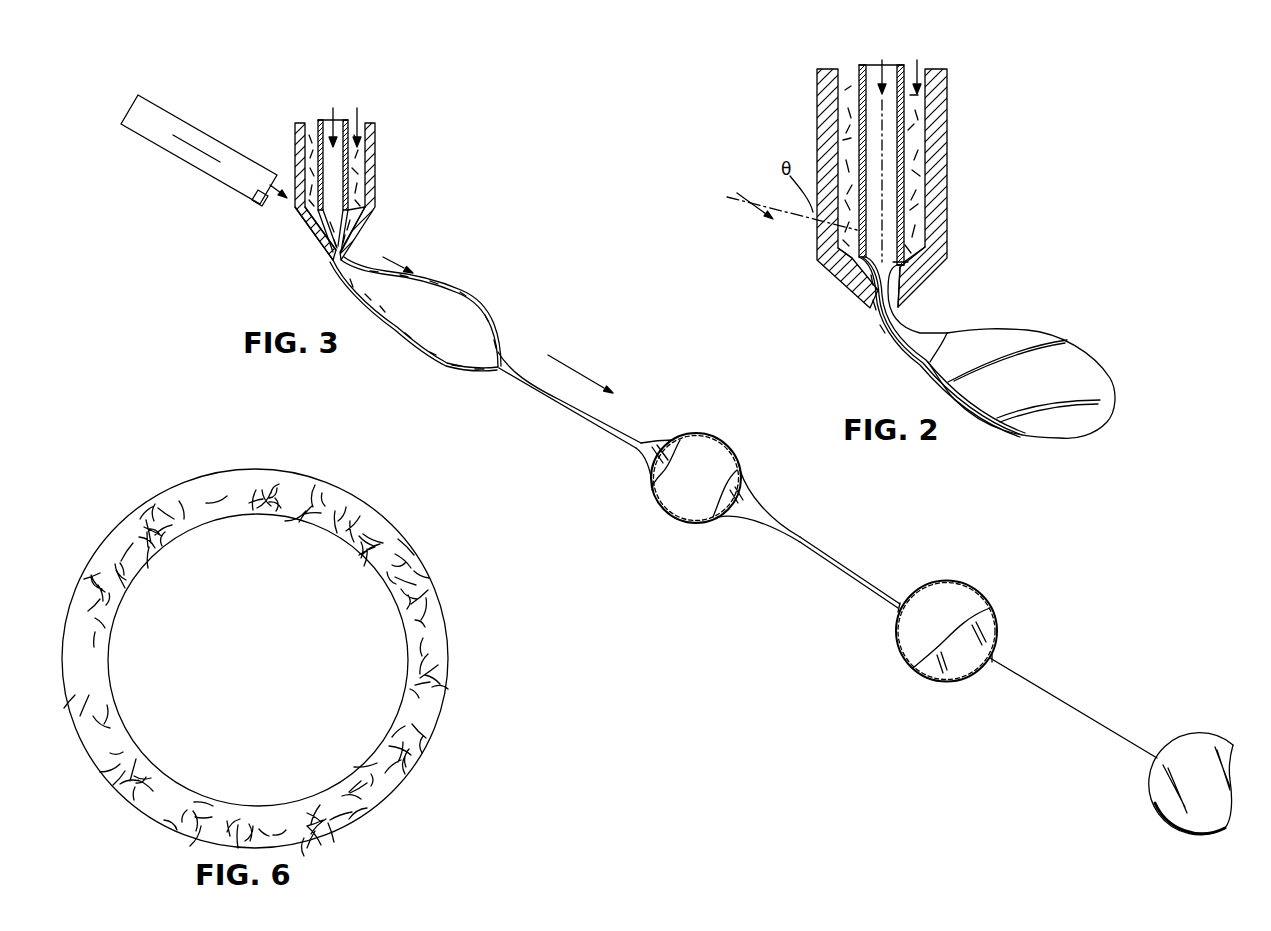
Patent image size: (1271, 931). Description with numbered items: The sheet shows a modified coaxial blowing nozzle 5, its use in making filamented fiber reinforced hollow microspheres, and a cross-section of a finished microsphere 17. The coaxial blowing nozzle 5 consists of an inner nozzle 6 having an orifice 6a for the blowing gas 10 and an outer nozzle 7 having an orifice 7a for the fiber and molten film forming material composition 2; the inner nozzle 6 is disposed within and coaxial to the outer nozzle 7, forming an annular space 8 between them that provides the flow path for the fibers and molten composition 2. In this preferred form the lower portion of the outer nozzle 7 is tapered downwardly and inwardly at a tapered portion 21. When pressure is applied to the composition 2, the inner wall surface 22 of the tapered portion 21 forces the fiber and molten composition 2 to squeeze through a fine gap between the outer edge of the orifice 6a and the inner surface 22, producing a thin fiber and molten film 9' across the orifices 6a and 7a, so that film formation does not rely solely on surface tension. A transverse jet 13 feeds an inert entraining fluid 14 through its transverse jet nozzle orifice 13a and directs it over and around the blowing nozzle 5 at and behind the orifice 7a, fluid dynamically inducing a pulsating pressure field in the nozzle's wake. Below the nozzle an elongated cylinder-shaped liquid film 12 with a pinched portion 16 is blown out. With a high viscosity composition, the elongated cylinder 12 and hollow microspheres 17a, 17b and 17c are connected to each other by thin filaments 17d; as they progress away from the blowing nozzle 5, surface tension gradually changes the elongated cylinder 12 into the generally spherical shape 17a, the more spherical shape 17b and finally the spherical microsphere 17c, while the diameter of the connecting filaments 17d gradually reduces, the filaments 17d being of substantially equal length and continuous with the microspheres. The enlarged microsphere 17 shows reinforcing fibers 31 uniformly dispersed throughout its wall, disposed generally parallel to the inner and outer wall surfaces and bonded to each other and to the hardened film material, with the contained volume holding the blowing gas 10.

In FIG. 2, the molten film forming material composition 2 is at (917, 67).
In FIG. 3, the molten film forming material composition 2 is at (359, 118).
In FIG. 2, the coaxial blowing nozzle 5 is at (957, 221).
In FIG. 3, the coaxial blowing nozzle 5 is at (385, 197).
In FIG. 2, the inner nozzle 6 is at (900, 180).
In FIG. 3, the inner nozzle 6 is at (375, 164).
In FIG. 2, the orifice of inner nozzle 6a is at (847, 260).
In FIG. 3, the orifice of inner nozzle 6a is at (314, 224).
In FIG. 2, the outer nozzle 7 is at (940, 200).
In FIG. 3, the outer nozzle 7 is at (377, 181).
In FIG. 2, the orifice of outer nozzle 7a is at (880, 303).
In FIG. 3, the orifice of outer nozzle 7a is at (318, 245).
In FIG. 2, the annular space 8 is at (917, 130).
In FIG. 3, the annular space 8 is at (375, 140).
In FIG. 2, the thin fiber and molten film 9' is at (929, 274).
In FIG. 2, the blowing gas 10 is at (883, 151).
In FIG. 3, the blowing gas 10 is at (337, 118).
In FIG. 6, the blowing gas 10 is at (350, 707).
In FIG. 2, the elongated cylinder-shaped liquid film 12 is at (1033, 331).
In FIG. 3, the elongated cylinder-shaped liquid film 12 is at (452, 287).
In FIG. 3, the transverse jet 13 is at (185, 121).
In FIG. 3, the transverse jet nozzle orifice 13a is at (282, 184).
In FIG. 2, the entraining fluid 14 is at (741, 219).
In FIG. 3, the entraining fluid 14 is at (597, 360).
In FIG. 2, the pinched portion 16 is at (887, 342).
In FIG. 3, the pinched portion 16 is at (329, 263).
In FIG. 6, the microsphere 17 is at (455, 645).
In FIG. 3, the generally spherical shape microsphere 17a is at (732, 448).
In FIG. 3, the more spherical shape microsphere 17b is at (985, 592).
In FIG. 3, the spherical shape microsphere 17c is at (1208, 733).
In FIG. 3, the thin filaments 17d is at (583, 415).
In FIG. 2, the tapered portion 21 is at (913, 292).
In FIG. 3, the tapered portion 21 is at (360, 232).
In FIG. 2, the inner wall surface of taper portion 22 is at (907, 257).
In FIG. 3, the inner wall surface of taper portion 22 is at (365, 219).
In FIG. 2, the reinforcing fibers 31 is at (903, 147).
In FIG. 3, the reinforcing fibers 31 is at (300, 145).
In FIG. 6, the reinforcing fibers 31 is at (420, 565).